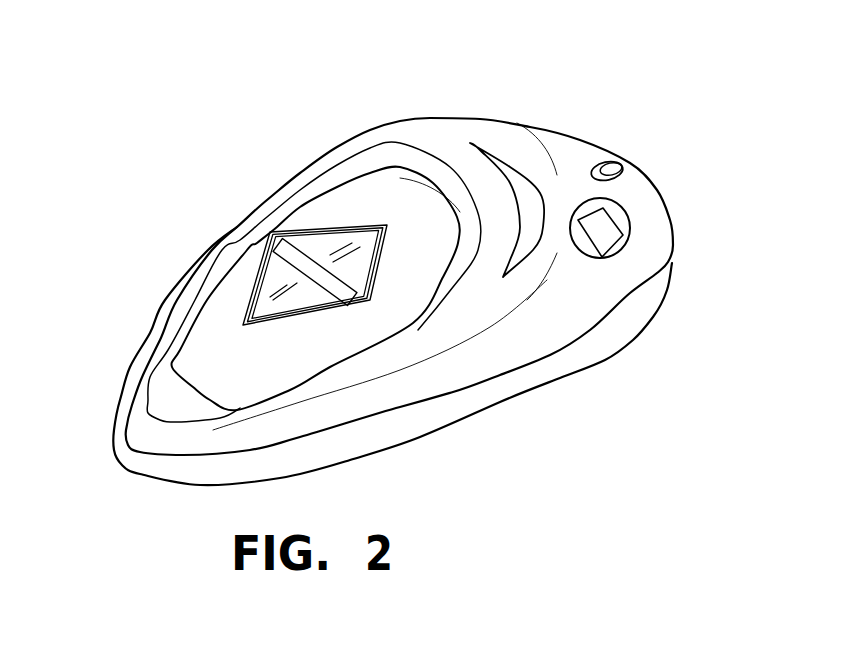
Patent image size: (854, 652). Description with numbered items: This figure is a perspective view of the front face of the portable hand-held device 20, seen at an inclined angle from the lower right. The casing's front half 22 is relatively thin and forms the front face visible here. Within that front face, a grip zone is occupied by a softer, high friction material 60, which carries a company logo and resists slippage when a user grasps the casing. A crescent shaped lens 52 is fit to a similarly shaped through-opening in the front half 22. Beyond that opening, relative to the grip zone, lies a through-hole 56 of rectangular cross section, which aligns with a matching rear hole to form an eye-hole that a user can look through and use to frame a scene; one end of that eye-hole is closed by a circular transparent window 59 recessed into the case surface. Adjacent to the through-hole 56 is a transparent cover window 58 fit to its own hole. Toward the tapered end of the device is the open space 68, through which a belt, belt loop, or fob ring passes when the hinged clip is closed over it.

The portable hand-held device 20 is at (219, 171).
The front half 22 is at (423, 130).
The crescent shaped lens 52 is at (517, 173).
The through-hole 56 is at (602, 230).
The transparent cover window 58 is at (613, 163).
The circular transparent window 59 is at (623, 253).
The high friction material 60 is at (370, 328).
The open space 68 is at (184, 411).